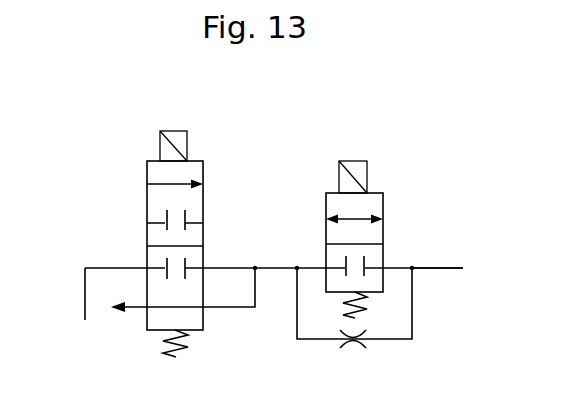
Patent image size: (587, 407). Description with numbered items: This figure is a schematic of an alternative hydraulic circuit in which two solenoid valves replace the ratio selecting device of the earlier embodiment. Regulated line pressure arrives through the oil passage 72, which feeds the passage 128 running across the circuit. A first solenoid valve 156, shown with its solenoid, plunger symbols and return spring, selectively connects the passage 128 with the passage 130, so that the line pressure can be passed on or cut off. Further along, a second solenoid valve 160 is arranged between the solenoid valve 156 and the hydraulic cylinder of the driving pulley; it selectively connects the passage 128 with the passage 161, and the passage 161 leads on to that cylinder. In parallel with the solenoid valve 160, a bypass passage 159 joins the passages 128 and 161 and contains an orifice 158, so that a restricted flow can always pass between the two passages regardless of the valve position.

The oil passage 72 is at (83, 290).
The passage 128 is at (228, 266).
The passage 130 is at (234, 309).
The solenoid valve 156 is at (216, 187).
The orifice 158 is at (357, 349).
The bypass passage 159 is at (413, 322).
The solenoid valve 160 is at (402, 195).
The passage 161 is at (442, 266).